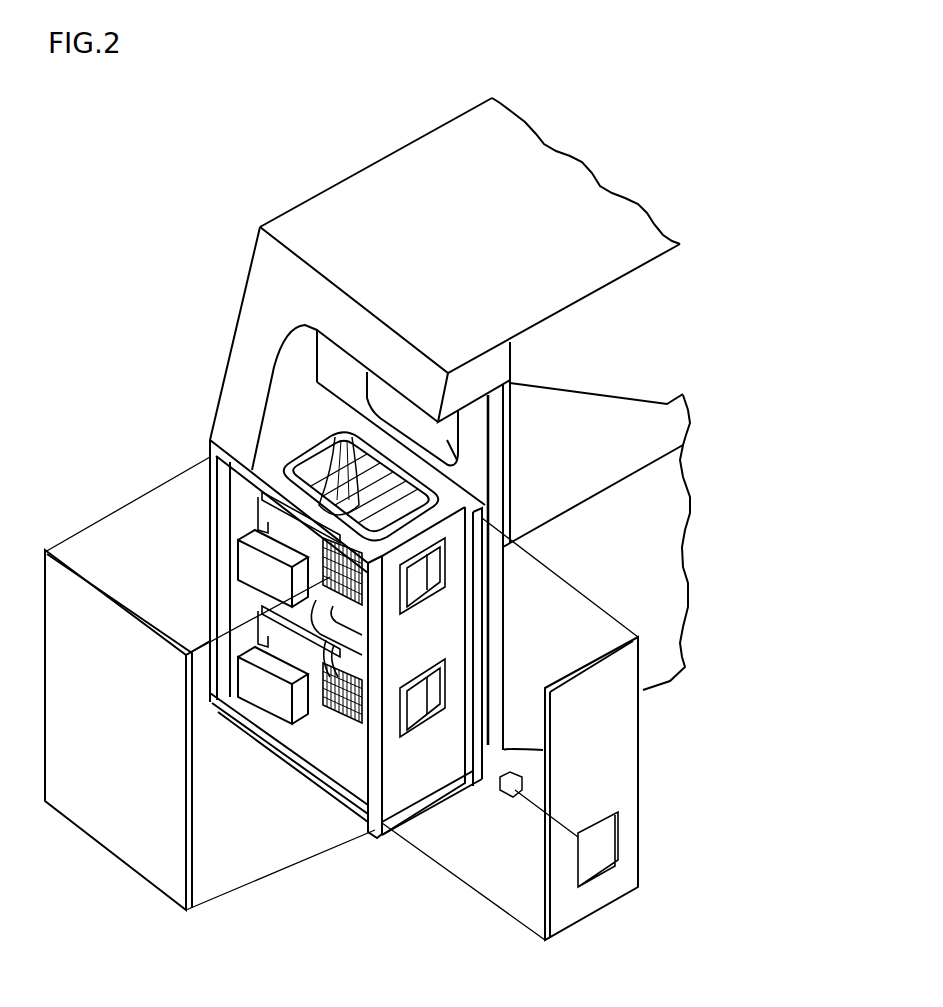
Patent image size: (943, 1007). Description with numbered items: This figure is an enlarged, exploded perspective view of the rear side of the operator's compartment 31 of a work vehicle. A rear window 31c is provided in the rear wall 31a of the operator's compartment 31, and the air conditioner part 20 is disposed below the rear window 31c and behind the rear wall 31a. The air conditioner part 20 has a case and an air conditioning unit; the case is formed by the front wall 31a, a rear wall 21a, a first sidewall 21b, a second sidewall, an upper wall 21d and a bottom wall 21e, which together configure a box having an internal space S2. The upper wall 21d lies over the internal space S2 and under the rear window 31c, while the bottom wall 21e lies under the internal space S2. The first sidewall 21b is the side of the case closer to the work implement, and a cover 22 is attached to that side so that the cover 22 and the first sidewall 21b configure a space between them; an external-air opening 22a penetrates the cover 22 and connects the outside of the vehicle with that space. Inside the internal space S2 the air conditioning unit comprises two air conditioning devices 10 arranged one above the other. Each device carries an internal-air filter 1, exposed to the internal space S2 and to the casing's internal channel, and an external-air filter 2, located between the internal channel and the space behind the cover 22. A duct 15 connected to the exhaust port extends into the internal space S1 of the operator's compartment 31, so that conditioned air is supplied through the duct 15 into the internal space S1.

The internal-air filter 1 is at (350, 577).
The external-air filter 2 is at (437, 585).
The air conditioning device 10 is at (229, 534).
The duct 15 is at (252, 569).
The air conditioner part 20 is at (453, 796).
The rear wall 21a is at (140, 860).
The first sidewall 21b is at (408, 777).
The upper wall 21d is at (300, 417).
The bottom wall 21e is at (355, 775).
The cover 22 is at (612, 770).
The external-air opening 22a is at (615, 850).
The operator's compartment 31 is at (392, 198).
The rear wall 31a is at (470, 422).
The rear window 31c is at (447, 440).
The internal space S1 is at (602, 412).
The internal space S2 is at (343, 755).